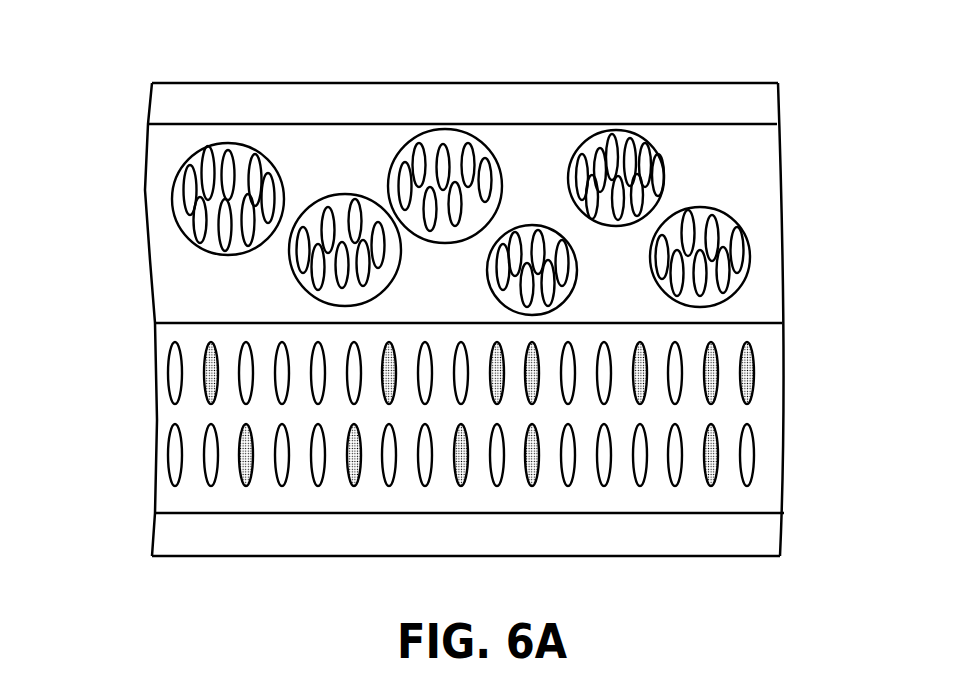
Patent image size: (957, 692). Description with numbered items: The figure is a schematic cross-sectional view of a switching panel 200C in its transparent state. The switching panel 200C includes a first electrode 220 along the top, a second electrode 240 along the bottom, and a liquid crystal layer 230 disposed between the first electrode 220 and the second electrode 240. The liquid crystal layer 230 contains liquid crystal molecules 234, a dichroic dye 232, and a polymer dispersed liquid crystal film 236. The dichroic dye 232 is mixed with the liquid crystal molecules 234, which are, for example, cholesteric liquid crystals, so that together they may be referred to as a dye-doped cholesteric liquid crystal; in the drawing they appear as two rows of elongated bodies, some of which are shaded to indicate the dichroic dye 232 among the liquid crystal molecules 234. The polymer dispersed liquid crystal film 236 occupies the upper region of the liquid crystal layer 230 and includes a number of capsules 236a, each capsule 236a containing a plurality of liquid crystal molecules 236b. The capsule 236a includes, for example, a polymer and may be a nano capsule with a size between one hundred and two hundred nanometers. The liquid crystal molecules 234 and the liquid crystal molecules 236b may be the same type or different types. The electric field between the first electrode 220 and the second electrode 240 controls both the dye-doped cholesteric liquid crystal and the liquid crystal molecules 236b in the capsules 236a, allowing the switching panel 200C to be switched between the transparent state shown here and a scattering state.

The switching panel 200C is at (160, 46).
The first electrode 220 is at (753, 106).
The liquid crystal layer 230 is at (128, 128).
The dichroic dye 232 is at (748, 372).
The liquid crystal molecules 234 is at (748, 455).
The polymer dispersed liquid crystal film 236 is at (802, 128).
The capsule 236a is at (700, 205).
The liquid crystal molecules 236b is at (660, 252).
The second electrode 240 is at (765, 538).